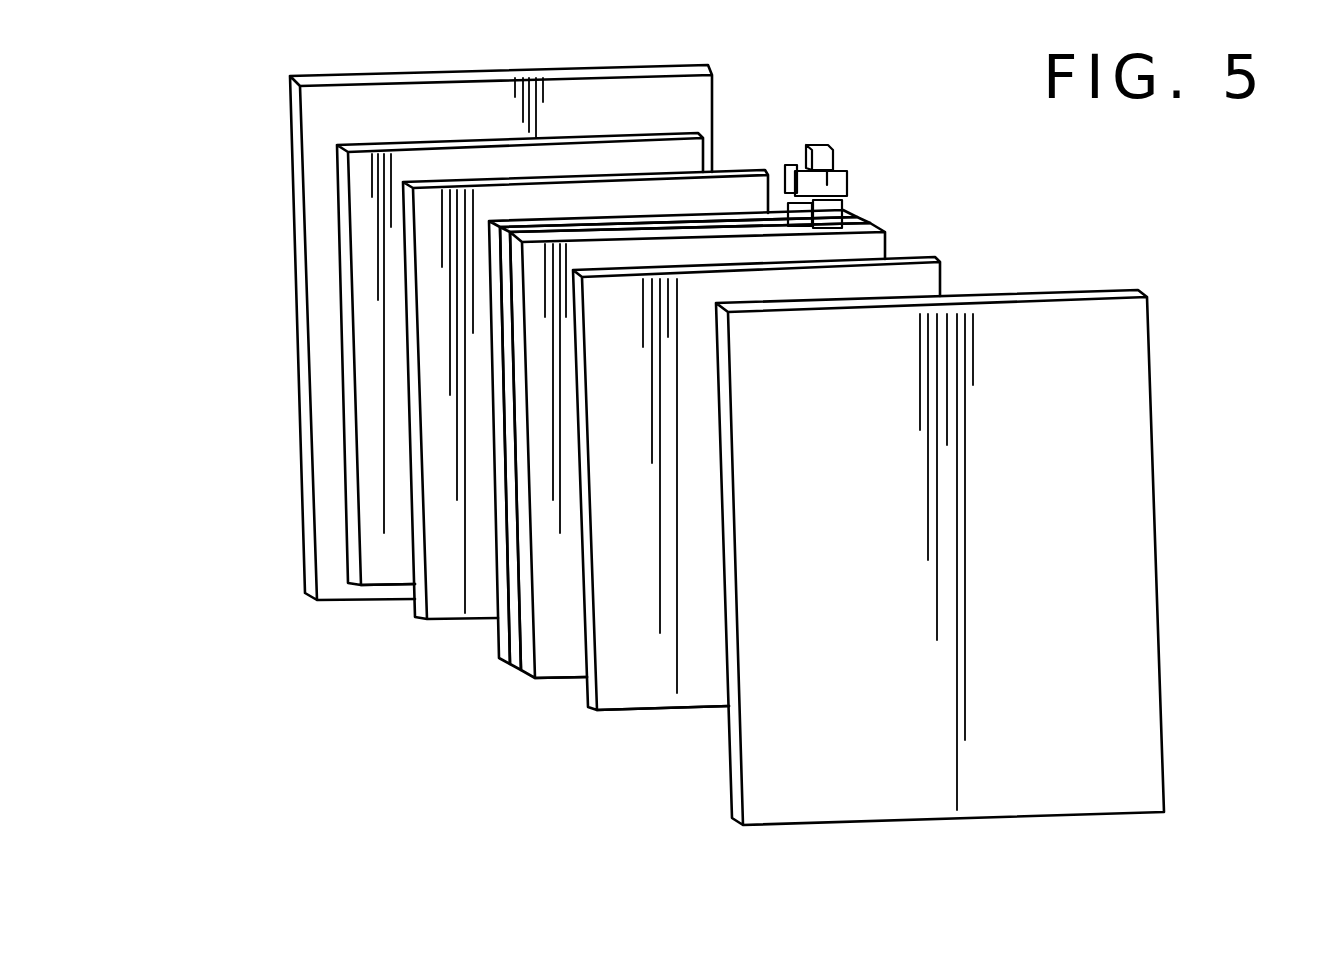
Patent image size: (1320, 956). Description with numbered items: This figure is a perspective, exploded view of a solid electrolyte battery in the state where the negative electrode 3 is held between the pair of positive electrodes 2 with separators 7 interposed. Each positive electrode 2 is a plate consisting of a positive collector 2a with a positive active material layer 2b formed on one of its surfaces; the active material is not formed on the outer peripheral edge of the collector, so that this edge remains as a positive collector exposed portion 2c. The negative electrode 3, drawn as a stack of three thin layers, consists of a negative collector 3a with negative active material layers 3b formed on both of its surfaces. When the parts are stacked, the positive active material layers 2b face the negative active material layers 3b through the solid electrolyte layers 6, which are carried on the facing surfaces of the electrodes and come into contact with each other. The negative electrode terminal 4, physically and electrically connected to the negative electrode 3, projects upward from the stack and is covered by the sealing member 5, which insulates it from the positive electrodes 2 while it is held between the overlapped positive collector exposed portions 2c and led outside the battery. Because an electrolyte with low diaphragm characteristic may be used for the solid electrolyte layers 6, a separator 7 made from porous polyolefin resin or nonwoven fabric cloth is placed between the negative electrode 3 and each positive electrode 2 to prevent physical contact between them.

The positive electrode 2 is at (709, 445).
The positive collector 2a is at (307, 432).
The positive active material layer 2b is at (348, 490).
The positive collector exposed portion 2c is at (338, 522).
The negative electrode 3 is at (623, 520).
The negative collector 3a is at (518, 672).
The negative active material layer 3b is at (507, 670).
The negative electrode terminal 4 is at (828, 158).
The sealing member 5 is at (840, 186).
The solid electrolyte layer 6 is at (375, 580).
The separator 7 is at (742, 185).